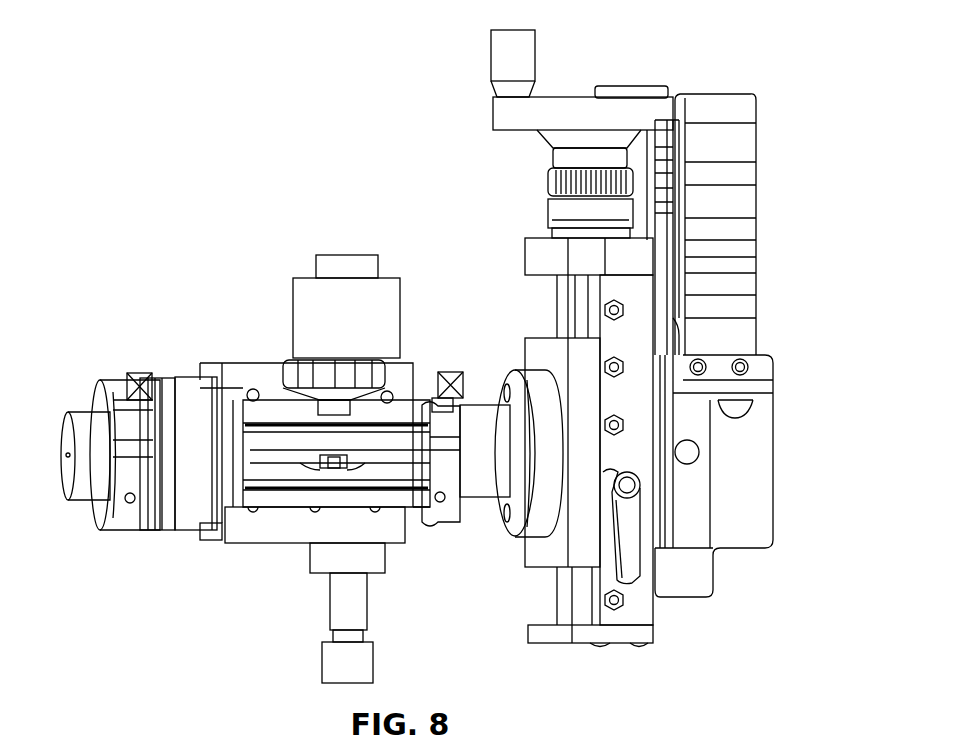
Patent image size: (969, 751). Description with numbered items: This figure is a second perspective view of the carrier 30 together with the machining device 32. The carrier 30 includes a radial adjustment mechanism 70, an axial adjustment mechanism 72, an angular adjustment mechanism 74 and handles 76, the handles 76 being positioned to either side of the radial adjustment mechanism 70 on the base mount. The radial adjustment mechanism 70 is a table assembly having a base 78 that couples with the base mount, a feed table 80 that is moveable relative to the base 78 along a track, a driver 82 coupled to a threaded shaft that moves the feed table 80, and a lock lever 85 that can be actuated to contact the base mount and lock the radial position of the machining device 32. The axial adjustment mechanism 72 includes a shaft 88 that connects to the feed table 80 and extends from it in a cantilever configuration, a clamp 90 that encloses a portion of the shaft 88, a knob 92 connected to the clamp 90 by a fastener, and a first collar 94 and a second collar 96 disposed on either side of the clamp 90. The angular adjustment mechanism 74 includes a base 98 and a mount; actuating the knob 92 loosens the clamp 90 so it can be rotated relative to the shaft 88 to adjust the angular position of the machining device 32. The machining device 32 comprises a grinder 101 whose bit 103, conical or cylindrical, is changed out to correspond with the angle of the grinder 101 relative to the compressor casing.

The carrier 30 is at (733, 64).
The machining device 32 is at (305, 300).
The radial adjustment mechanism 70 is at (540, 153).
The axial adjustment mechanism 72 is at (158, 366).
The angular adjustment mechanism 74 is at (298, 376).
The handles 76 is at (745, 185).
The base 78 is at (638, 337).
The feed table 80 is at (545, 348).
The driver 82 is at (527, 54).
The lock lever 85 is at (628, 540).
The shaft 88 is at (80, 468).
The clamp 90 is at (288, 437).
The knob 92 is at (365, 378).
The first collar 94 is at (122, 517).
The second collar 96 is at (455, 507).
The base 98 is at (300, 535).
The grinder 101 is at (400, 662).
The bit 103 is at (335, 663).